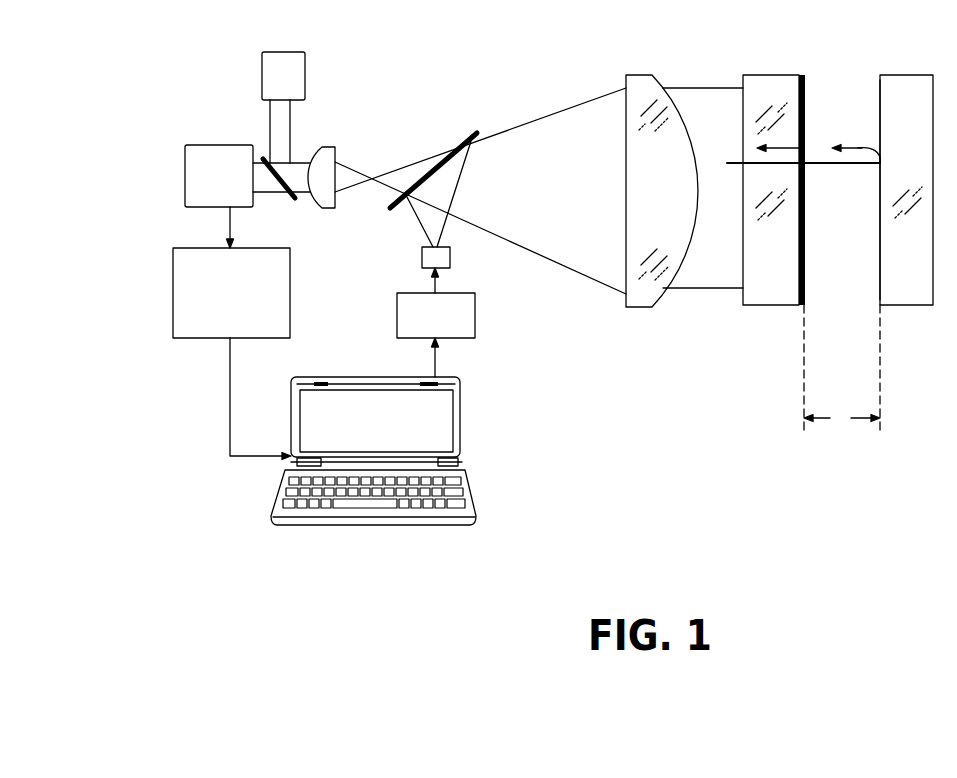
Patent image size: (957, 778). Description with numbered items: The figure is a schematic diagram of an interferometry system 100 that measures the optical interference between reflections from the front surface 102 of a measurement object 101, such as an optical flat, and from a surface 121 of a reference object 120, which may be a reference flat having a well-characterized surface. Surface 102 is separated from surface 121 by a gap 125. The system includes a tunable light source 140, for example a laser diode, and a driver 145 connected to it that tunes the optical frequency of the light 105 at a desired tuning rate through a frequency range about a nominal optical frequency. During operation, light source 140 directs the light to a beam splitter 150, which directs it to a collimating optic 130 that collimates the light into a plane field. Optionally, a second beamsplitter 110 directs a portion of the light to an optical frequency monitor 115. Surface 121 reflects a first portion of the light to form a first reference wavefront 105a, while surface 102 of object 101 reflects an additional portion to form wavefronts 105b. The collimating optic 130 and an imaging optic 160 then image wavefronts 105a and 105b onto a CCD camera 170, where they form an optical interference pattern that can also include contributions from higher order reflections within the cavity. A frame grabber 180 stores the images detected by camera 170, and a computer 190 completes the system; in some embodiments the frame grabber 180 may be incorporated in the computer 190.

The interferometry system 100 is at (661, 518).
The measurement object 101 is at (892, 171).
The front surface 102 is at (836, 168).
The light 105 is at (786, 129).
The first reference wavefront 105a is at (815, 123).
The wavefronts 105b is at (845, 174).
The second beamsplitter 110 is at (275, 194).
The optical frequency monitor 115 is at (293, 84).
The reference object 120 is at (757, 171).
The surface 121 is at (833, 216).
The gap 125 is at (842, 340).
The collimating optic 130 is at (633, 172).
The tunable light source 140 is at (422, 250).
The driver 145 is at (421, 326).
The beam splitter 150 is at (427, 170).
The imaging optic 160 is at (351, 149).
The CCD camera 170 is at (215, 186).
The frame grabber 180 is at (216, 303).
The computer 190 is at (458, 448).